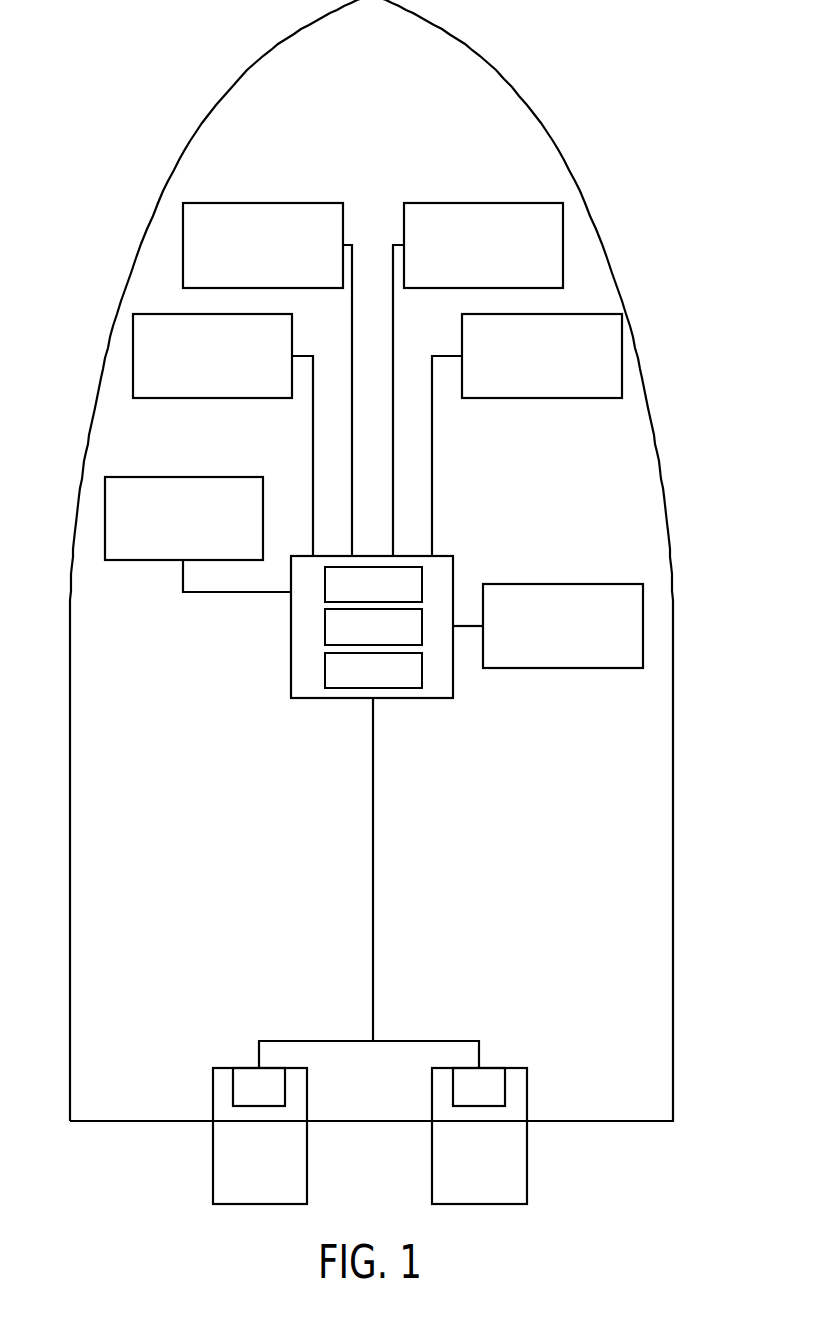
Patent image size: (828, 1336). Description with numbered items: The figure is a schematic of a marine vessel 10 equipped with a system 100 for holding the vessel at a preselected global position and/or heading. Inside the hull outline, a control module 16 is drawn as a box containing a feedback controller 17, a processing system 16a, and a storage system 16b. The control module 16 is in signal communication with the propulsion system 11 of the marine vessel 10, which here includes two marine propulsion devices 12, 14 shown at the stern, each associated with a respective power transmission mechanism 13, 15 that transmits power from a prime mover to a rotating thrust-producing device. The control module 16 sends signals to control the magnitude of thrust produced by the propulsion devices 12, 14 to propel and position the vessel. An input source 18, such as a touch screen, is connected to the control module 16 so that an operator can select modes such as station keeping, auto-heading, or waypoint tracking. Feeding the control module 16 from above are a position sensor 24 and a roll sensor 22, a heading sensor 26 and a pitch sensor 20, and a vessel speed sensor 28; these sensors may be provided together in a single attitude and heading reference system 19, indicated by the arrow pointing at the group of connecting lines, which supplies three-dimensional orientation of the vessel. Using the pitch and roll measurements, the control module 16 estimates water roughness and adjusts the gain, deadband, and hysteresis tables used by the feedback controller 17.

The marine vessel 10 is at (541, 124).
The propulsion system 11 is at (428, 1018).
The marine propulsion device 12 is at (212, 1170).
The power transmission mechanism 13 is at (232, 1098).
The marine propulsion device 14 is at (527, 1172).
The power transmission mechanism 15 is at (505, 1092).
The control module 16 is at (412, 700).
The processing system 16a is at (323, 638).
The storage system 16b is at (323, 680).
The feedback controller 17 is at (323, 595).
The input source 18 is at (622, 668).
The attitude and heading reference system 19 is at (448, 472).
The pitch sensor 20 is at (542, 398).
The roll sensor 22 is at (422, 202).
The position sensor 24 is at (297, 202).
The heading sensor 26 is at (203, 398).
The vessel speed sensor 28 is at (140, 560).
The system 100 is at (273, 755).